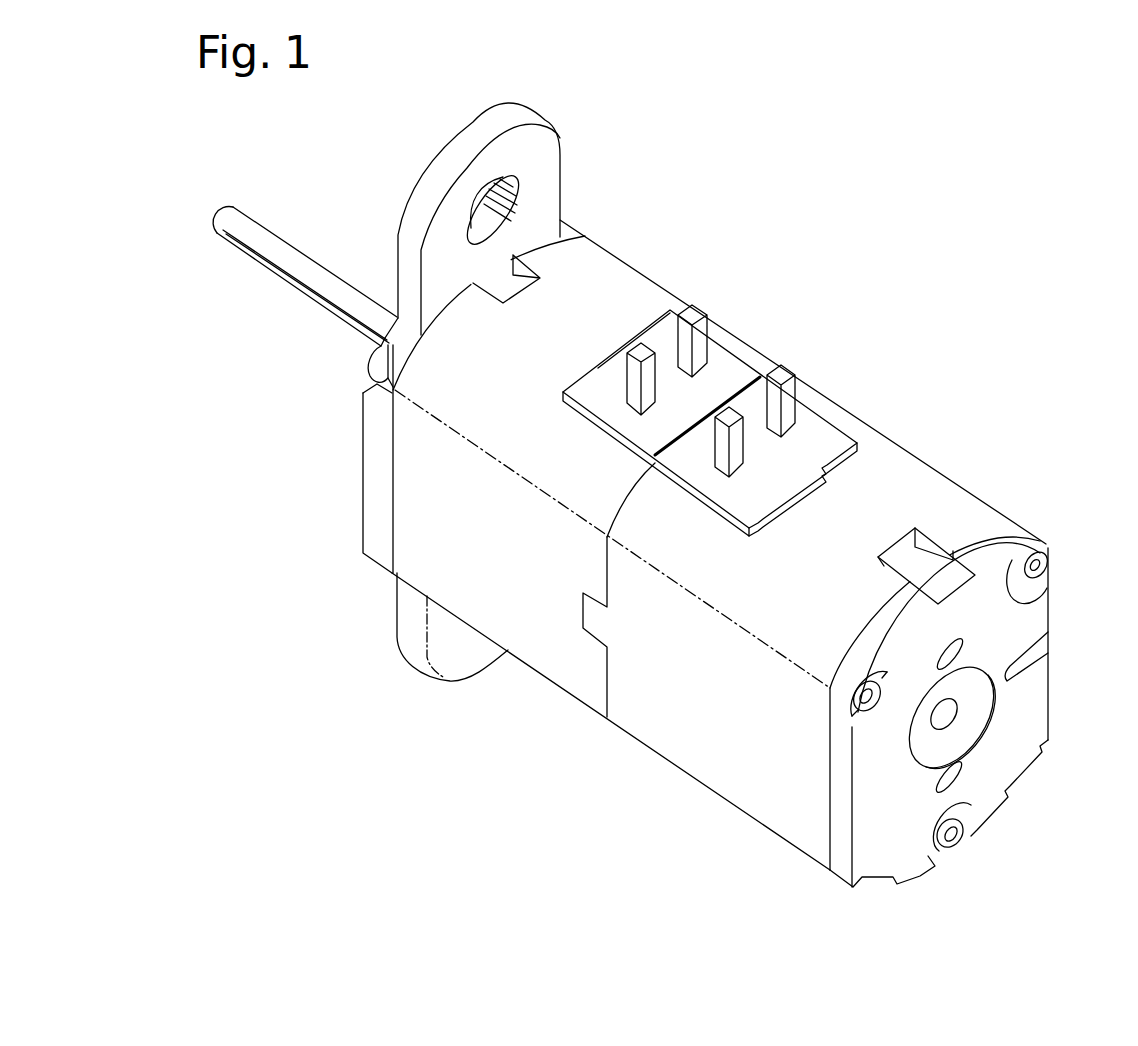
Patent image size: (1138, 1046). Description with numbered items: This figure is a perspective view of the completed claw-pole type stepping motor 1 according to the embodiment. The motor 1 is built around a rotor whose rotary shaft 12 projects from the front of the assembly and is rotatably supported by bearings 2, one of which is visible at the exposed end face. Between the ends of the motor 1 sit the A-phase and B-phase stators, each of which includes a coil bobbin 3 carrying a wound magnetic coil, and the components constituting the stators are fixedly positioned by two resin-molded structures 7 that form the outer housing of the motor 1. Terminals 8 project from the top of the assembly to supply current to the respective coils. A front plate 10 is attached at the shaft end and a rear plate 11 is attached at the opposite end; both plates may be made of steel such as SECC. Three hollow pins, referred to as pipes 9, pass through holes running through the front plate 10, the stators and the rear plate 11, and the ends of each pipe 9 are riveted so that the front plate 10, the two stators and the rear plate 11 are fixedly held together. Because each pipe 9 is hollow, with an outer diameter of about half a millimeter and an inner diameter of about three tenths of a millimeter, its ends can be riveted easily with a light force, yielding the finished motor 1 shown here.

The claw-pole type stepping motor 1 is at (933, 293).
The bearing 2 is at (972, 697).
The coil bobbin 3 is at (753, 405).
The resin-molded structure 7 is at (616, 275).
The terminal 8 is at (780, 373).
The pipe 9 is at (1048, 558).
The front plate 10 is at (413, 205).
The rear plate 11 is at (867, 777).
The rotary shaft 12 is at (295, 268).